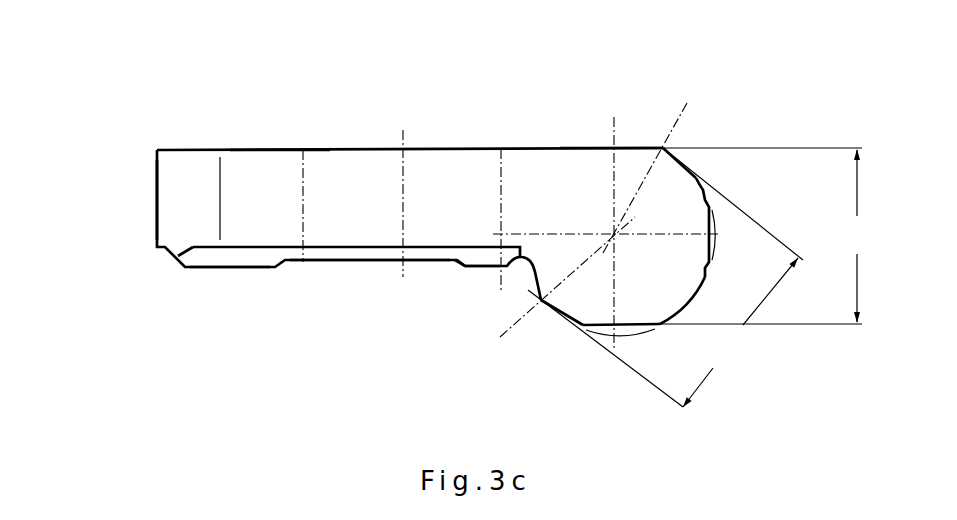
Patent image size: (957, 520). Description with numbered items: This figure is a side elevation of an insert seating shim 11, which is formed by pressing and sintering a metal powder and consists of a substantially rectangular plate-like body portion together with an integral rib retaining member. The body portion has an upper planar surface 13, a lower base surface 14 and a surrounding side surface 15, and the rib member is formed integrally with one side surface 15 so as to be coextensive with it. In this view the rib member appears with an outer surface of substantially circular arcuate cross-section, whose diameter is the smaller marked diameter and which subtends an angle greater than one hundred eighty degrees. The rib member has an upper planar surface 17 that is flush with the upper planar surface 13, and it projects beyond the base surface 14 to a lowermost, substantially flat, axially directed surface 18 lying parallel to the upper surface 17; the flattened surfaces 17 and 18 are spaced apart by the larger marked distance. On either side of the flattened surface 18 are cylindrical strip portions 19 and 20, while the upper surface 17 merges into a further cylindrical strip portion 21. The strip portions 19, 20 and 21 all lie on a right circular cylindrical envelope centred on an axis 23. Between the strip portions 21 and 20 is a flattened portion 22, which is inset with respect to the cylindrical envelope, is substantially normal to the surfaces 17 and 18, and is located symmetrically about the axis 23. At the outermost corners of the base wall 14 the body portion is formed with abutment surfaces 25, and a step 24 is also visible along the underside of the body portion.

The insert seating shim 11 is at (448, 148).
The upper planar surface 13 is at (275, 148).
The lower base surface 14 is at (326, 270).
The side surface 15 is at (185, 208).
The upper planar surface of rib member 17 is at (633, 148).
The lowermost flat axially directed surface 18 is at (598, 328).
The cylindrical strip portion 19 is at (556, 313).
The cylindrical strip portion 20 is at (683, 313).
The cylindrical strip portion 21 is at (680, 163).
The flattened portion 22 is at (708, 217).
The axis 23 is at (614, 234).
The step of shank 24 is at (480, 268).
The abutment surfaces 25 is at (215, 268).